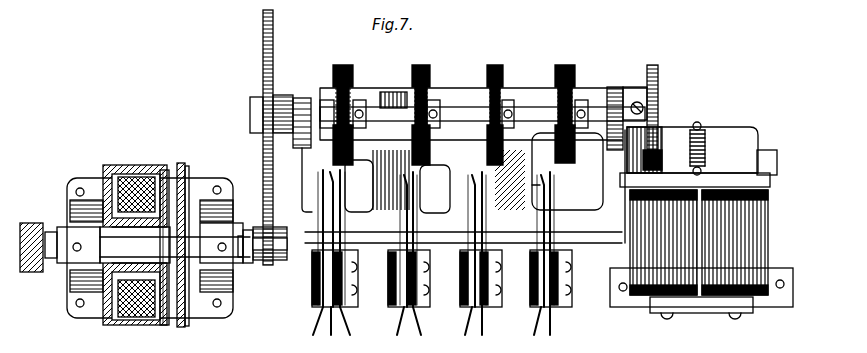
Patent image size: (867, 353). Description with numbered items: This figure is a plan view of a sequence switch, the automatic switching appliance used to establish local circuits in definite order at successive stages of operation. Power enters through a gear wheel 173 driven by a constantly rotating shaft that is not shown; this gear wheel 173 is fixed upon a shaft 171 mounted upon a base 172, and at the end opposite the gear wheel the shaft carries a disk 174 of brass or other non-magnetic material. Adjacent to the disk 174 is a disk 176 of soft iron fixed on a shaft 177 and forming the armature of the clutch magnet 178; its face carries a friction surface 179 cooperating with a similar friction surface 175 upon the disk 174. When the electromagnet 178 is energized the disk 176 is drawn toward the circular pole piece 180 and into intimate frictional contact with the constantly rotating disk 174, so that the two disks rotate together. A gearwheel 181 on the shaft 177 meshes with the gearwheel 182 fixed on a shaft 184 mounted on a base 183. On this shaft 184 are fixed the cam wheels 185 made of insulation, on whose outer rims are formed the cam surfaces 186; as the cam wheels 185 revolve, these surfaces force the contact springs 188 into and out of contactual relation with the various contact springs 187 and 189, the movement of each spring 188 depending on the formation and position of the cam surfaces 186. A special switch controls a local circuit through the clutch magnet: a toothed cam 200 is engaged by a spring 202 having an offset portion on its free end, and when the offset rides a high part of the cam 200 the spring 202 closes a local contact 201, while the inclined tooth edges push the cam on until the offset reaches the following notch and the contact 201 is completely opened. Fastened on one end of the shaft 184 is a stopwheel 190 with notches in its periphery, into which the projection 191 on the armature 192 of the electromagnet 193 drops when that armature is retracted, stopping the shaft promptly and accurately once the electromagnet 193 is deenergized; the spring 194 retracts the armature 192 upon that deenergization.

The shaft 171 is at (97, 238).
The base 172 is at (78, 318).
The gear wheel 173 is at (32, 277).
The disk 174 is at (162, 326).
The friction surface 175 is at (184, 328).
The disk 176 is at (190, 183).
The shaft 177 is at (248, 265).
The clutch magnet 178 is at (122, 168).
The friction surface 179 is at (186, 170).
The circular pole piece 180 is at (160, 175).
The pinion 181 is at (271, 262).
The gearwheel 182 is at (274, 48).
The base 183 is at (304, 96).
The shaft 184 is at (383, 110).
The cam wheels 185 is at (355, 70).
The cam surfaces 186 is at (486, 80).
The contact springs 187 is at (320, 245).
The contact springs 188 is at (343, 172).
The contact springs 189 is at (344, 194).
The stopwheel 190 is at (659, 92).
The projection 191 is at (664, 145).
The armature 192 is at (718, 174).
The electromagnet 193 is at (766, 233).
The spring 194 is at (706, 142).
The cam 200 is at (577, 66).
The local contact 201 is at (548, 173).
The spring 202 is at (548, 191).